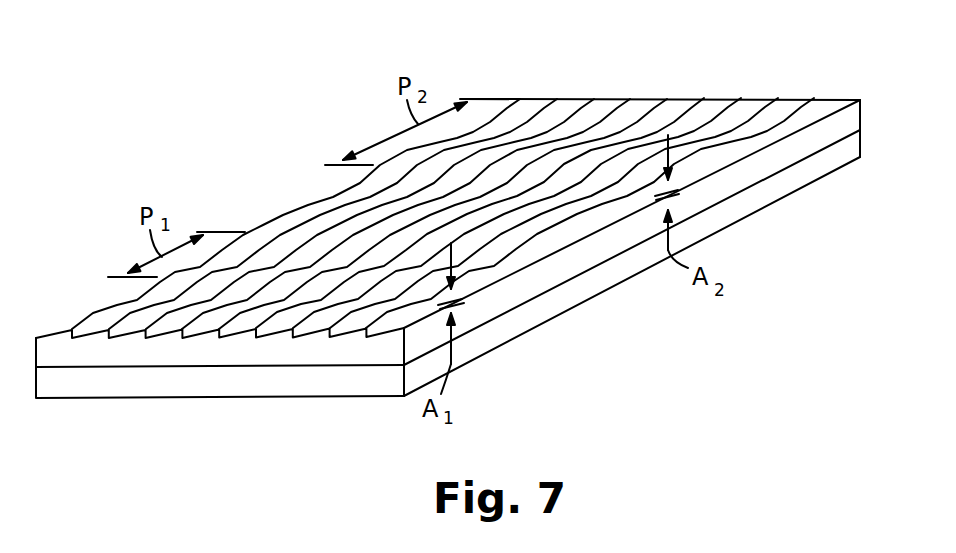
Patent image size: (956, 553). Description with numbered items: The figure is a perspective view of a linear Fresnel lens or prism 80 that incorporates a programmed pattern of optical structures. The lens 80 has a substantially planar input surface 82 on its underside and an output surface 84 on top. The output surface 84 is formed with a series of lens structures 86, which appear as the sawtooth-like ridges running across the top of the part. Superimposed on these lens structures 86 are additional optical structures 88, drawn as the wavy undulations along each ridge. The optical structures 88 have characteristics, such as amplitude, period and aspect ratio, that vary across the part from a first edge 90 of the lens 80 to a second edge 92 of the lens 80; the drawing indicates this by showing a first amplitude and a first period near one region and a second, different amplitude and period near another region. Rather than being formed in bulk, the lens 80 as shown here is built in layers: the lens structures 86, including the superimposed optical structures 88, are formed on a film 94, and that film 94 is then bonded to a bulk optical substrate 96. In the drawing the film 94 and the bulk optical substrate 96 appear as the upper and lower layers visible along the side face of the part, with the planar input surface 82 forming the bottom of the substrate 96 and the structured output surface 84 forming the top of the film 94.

The linear Fresnel lens or prism 80 is at (622, 72).
The input surface 82 is at (492, 364).
The output surface 84 is at (347, 196).
The lens structures 86 is at (320, 330).
The optical structures 88 is at (460, 278).
The first edge 90 is at (403, 395).
The second edge 92 is at (860, 148).
The film 94 is at (560, 270).
The bulk optical substrate 96 is at (735, 204).